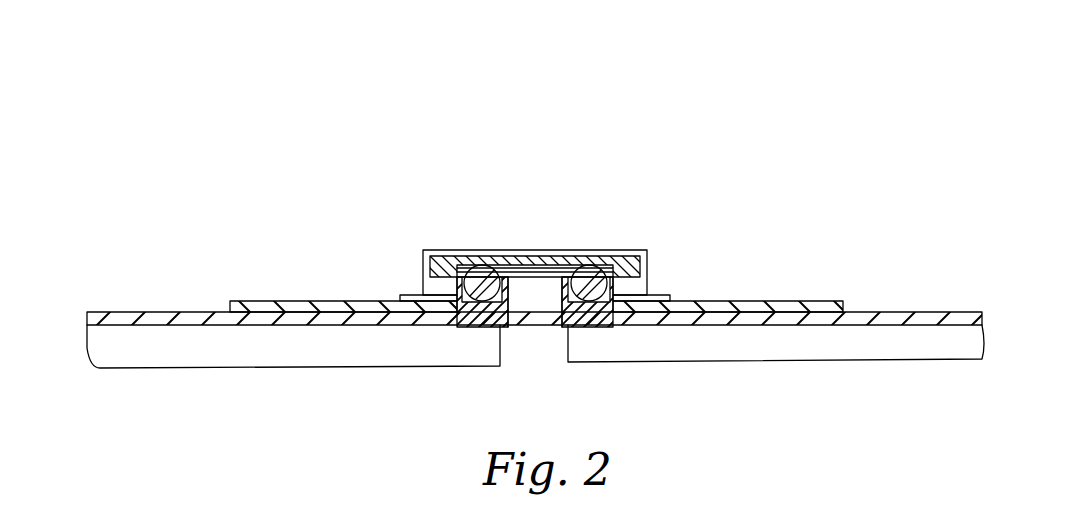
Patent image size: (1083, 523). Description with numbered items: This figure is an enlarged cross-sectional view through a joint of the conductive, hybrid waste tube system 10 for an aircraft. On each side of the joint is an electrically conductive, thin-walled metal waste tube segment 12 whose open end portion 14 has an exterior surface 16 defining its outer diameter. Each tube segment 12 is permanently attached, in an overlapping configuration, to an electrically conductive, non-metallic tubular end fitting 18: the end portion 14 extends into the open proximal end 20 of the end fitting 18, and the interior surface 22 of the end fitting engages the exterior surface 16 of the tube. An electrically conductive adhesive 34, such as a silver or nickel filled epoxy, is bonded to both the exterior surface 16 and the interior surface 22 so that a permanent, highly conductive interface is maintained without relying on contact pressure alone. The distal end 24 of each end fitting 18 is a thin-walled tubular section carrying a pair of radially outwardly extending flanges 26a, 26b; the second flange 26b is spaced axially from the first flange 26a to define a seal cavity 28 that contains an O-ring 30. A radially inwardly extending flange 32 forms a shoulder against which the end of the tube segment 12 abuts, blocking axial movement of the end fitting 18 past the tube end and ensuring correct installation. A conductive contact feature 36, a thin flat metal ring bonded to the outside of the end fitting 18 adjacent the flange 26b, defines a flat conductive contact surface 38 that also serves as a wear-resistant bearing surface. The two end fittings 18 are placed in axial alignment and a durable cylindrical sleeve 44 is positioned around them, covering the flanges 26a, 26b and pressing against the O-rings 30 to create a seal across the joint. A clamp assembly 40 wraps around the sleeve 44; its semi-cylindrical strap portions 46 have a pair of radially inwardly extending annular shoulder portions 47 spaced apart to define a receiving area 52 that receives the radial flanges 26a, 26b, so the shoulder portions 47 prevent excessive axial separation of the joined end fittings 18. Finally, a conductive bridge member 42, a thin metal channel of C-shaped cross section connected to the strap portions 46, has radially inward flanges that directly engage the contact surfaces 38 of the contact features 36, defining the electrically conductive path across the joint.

The hybrid waste tube system 10 is at (231, 83).
The waste tube segment 12 is at (100, 312).
The open end portion 14 is at (248, 314).
The exterior surface 16 is at (192, 312).
The end fitting 18 is at (262, 300).
The open proximal end 20 is at (340, 300).
The interior surface 22 is at (345, 303).
The distal end 24 is at (478, 300).
The first radial flange 26a is at (578, 303).
The second radial flange 26b is at (607, 303).
The seal cavity 28 is at (495, 312).
The O-ring 30 is at (595, 268).
The inner flange 32 is at (568, 330).
The electrically conductive adhesive 34 is at (300, 314).
The conductive contact feature 36 is at (405, 295).
The conductive contact surface 38 is at (446, 262).
The clamp assembly 40 is at (533, 248).
The conductive bridge member 42 is at (424, 262).
The cylindrical sleeve 44 is at (527, 266).
The semi-cylindrical strap portion 46 is at (560, 268).
The shoulder portion 47 is at (430, 262).
The receiving area 52 is at (515, 268).